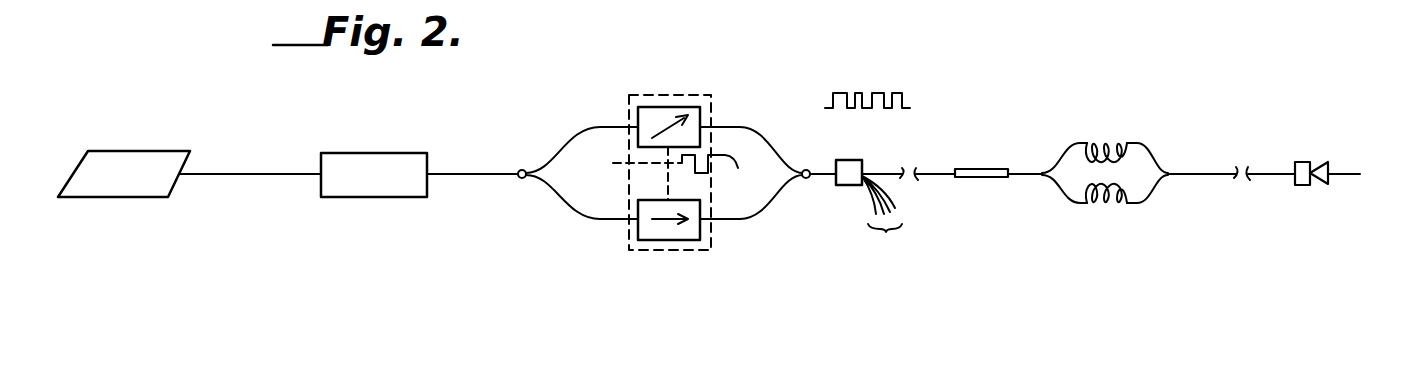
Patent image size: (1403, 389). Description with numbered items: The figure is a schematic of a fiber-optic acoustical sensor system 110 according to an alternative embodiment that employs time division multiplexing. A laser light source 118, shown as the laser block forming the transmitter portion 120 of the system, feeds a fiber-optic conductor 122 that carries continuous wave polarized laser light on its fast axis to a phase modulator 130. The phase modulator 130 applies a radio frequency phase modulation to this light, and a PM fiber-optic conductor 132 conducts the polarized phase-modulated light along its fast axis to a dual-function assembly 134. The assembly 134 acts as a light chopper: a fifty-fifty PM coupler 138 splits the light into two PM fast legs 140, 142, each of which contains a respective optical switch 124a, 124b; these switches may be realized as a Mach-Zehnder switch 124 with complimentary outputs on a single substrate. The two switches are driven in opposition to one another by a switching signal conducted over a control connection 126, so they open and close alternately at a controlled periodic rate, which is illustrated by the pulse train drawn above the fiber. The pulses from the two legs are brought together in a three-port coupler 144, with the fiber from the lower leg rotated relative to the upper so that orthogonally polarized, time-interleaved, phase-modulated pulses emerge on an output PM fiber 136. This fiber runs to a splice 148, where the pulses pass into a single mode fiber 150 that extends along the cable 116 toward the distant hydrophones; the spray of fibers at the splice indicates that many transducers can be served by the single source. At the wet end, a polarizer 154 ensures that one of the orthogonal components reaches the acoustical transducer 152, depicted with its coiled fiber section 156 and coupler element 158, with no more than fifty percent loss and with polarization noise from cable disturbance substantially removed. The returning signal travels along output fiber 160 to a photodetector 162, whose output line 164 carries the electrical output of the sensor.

The acoustical sensor system 110 is at (825, 76).
The cable 116 is at (930, 152).
The laser light source 118 is at (130, 150).
The transmitter 120 is at (215, 120).
The fiber-optic conductor 122 is at (265, 173).
The Mach-Zehnder switch 124 is at (714, 88).
The optical switch 124a is at (662, 106).
The optical switch 124b is at (689, 241).
The control connection 126 is at (625, 173).
The phase modulator 130 is at (376, 152).
The PM fiber-optic conductor 132 is at (451, 172).
The dual-function assembly 134 is at (701, 66).
The output PM fiber-optic conductor 136 is at (824, 177).
The 50/50 PM coupler 138 is at (519, 168).
The PM fast leg 140 is at (598, 116).
The PM fast leg 142 is at (614, 233).
The three-port coupler 144 is at (808, 168).
The splice 148 is at (862, 160).
The single mode fiber 150 is at (935, 177).
The acoustical transducer 152 is at (1092, 132).
The polarizer 154 is at (988, 178).
The optical acoustical transducer 156 is at (1152, 138).
The loop coupler 158 is at (1138, 131).
The output fiber 160 is at (1242, 182).
The photodetector 162 is at (1318, 160).
The detector output 164 is at (1348, 176).